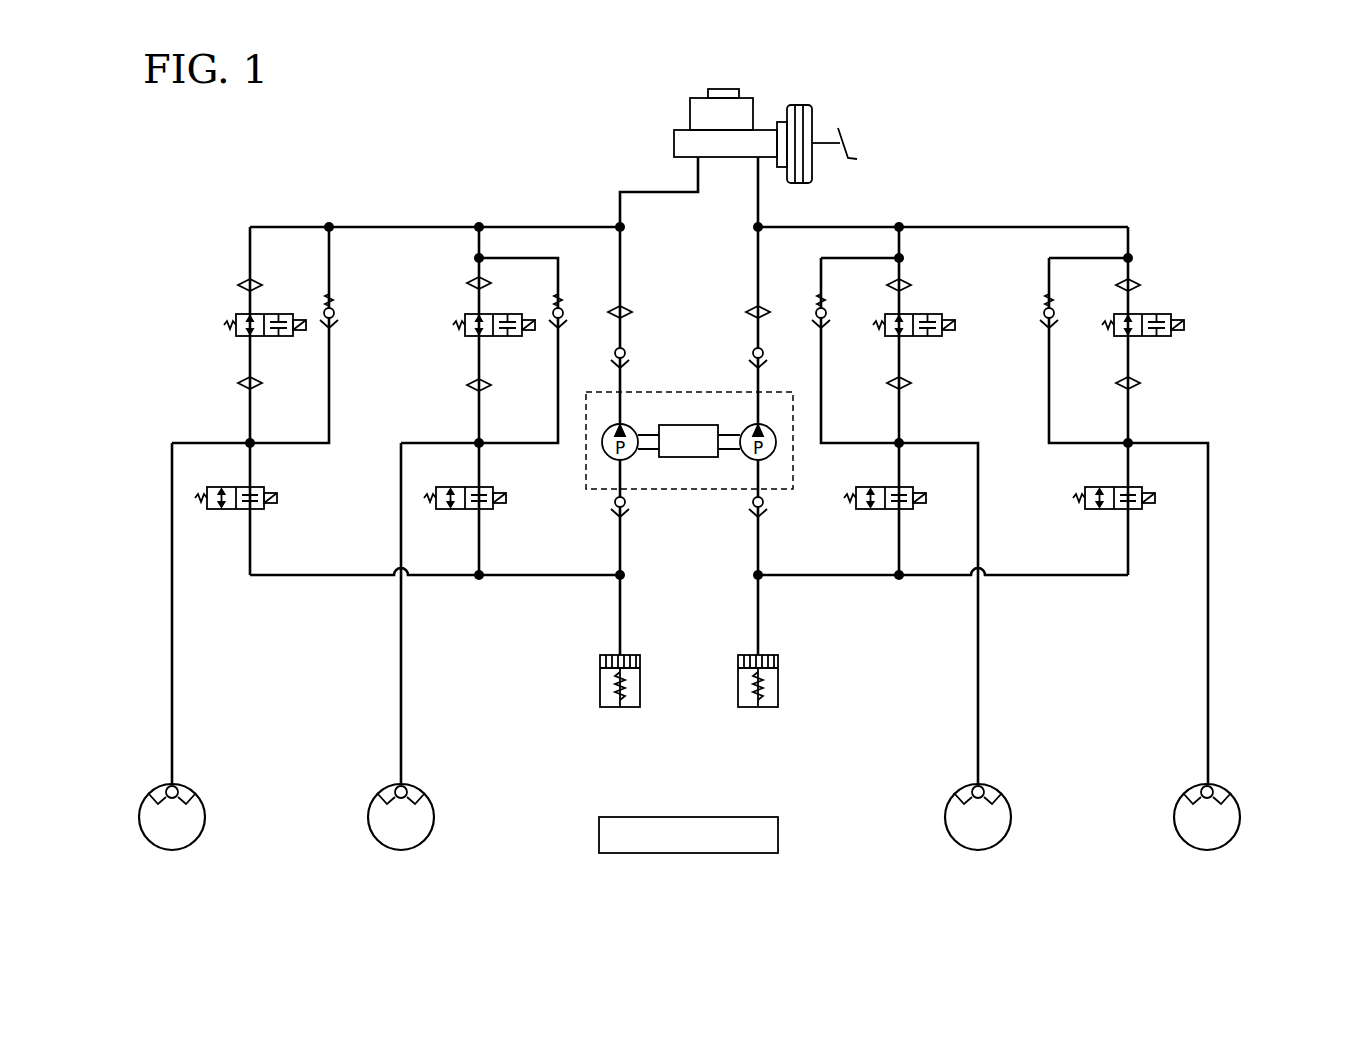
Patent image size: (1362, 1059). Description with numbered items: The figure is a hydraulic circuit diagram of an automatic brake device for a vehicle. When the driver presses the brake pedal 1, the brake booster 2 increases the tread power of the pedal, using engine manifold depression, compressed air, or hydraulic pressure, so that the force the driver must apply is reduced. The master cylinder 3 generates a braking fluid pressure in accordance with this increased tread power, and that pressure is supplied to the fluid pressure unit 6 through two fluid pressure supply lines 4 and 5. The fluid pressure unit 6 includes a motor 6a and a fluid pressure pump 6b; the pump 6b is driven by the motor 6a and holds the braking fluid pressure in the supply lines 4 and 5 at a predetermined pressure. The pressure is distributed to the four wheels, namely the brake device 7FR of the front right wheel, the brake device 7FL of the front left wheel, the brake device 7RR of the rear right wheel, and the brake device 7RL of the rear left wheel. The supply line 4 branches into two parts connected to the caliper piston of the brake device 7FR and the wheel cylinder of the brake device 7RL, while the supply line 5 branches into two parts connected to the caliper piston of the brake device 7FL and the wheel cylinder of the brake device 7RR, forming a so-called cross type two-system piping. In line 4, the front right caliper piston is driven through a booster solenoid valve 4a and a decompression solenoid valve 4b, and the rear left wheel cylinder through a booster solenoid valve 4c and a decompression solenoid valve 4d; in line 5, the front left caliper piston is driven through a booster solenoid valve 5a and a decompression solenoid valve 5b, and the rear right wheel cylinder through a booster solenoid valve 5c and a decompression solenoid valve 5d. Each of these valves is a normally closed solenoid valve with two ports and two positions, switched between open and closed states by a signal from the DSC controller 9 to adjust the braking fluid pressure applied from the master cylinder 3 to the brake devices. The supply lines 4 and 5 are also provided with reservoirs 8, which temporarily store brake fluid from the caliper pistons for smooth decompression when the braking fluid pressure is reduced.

The brake pedal 1 is at (855, 150).
The brake booster 2 is at (800, 105).
The master cylinder 3 is at (674, 141).
The fluid pressure supply line 4 is at (976, 225).
The fluid pressure supply line 5 is at (409, 225).
The booster solenoid valve 4a is at (1160, 312).
The decompression solenoid valve 4b is at (1094, 511).
The booster solenoid valve 4c is at (931, 312).
The decompression solenoid valve 4d is at (865, 511).
The booster solenoid valve 5a is at (283, 312).
The decompression solenoid valve 5b is at (215, 511).
The booster solenoid valve 5c is at (513, 312).
The decompression solenoid valve 5d is at (445, 511).
The fluid pressure unit 6 is at (688, 392).
The motor 6a is at (683, 460).
The fluid pressure pump 6b is at (636, 422).
The brake device of the front left wheel 7FL is at (205, 817).
The brake device of the rear right wheel 7RR is at (434, 817).
The brake device of the rear left wheel 7RL is at (1011, 817).
The brake device of the front right wheel 7FR is at (1240, 817).
The reservoir 8 is at (599, 686).
The DSC controller 9 is at (778, 835).